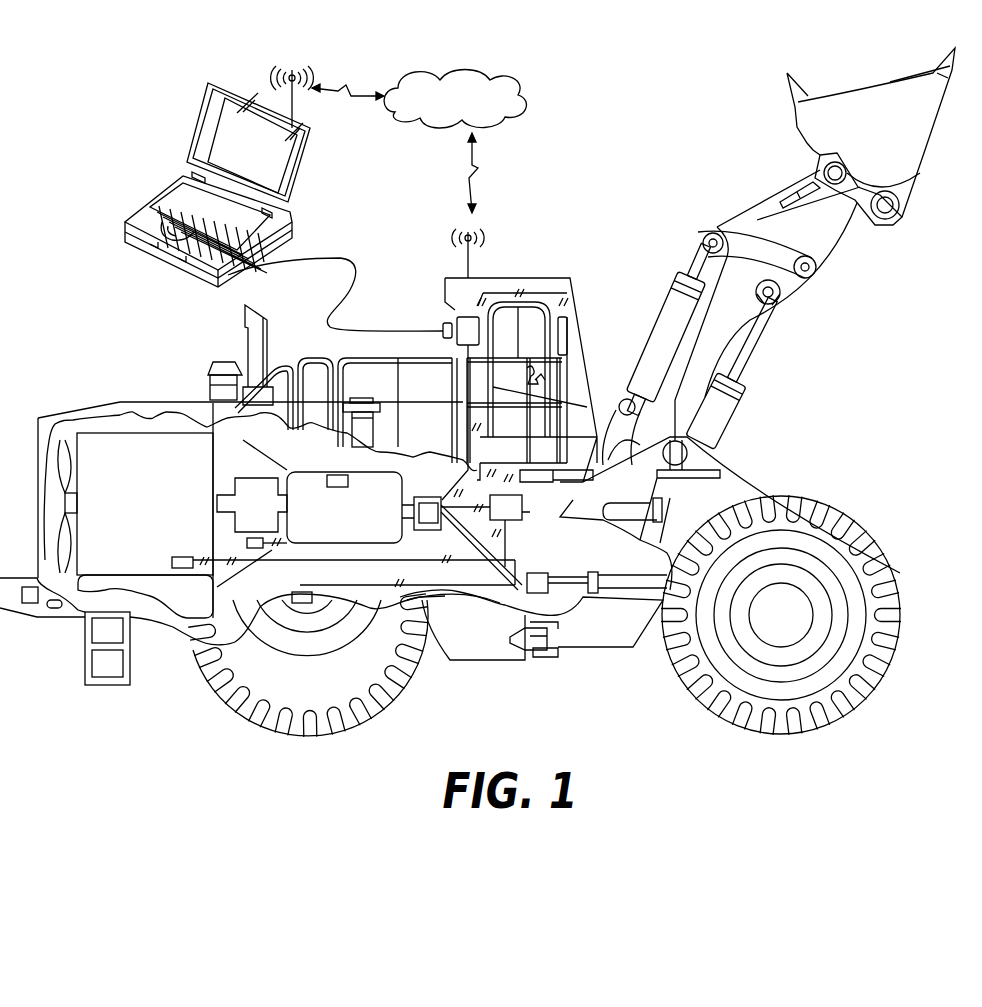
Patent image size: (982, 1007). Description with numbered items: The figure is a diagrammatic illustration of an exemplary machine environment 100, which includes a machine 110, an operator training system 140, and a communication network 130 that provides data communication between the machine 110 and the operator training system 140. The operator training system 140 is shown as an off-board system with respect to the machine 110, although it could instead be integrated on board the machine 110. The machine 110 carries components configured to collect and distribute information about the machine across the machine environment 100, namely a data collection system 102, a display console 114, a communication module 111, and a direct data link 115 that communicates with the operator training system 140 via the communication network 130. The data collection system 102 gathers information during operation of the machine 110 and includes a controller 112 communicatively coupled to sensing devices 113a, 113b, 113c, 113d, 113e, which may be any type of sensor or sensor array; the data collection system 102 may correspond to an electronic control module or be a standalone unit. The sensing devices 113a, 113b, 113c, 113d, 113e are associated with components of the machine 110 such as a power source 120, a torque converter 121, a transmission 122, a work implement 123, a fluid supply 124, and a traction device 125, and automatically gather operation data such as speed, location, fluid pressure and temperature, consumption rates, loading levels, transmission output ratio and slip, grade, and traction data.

The machine environment 100 is at (595, 102).
The data collection system 102 is at (480, 597).
The machine 110 is at (856, 460).
The communication module 111 is at (464, 346).
The controller 112 is at (520, 518).
The sensing device 113a is at (337, 475).
The sensing device 113b is at (172, 561).
The sensing device 113c is at (653, 499).
The sensing device 113d is at (297, 592).
The sensing device 113e is at (247, 542).
The display console 114 is at (568, 340).
The direct data link 115 is at (444, 325).
The power source 120 is at (169, 511).
The torque converter 121 is at (269, 516).
The transmission 122 is at (342, 523).
The work implement 123 is at (894, 140).
The fluid supply 124 is at (203, 602).
The traction device 125 is at (318, 735).
The communication network 130 is at (427, 128).
The operator training system 140 is at (114, 178).